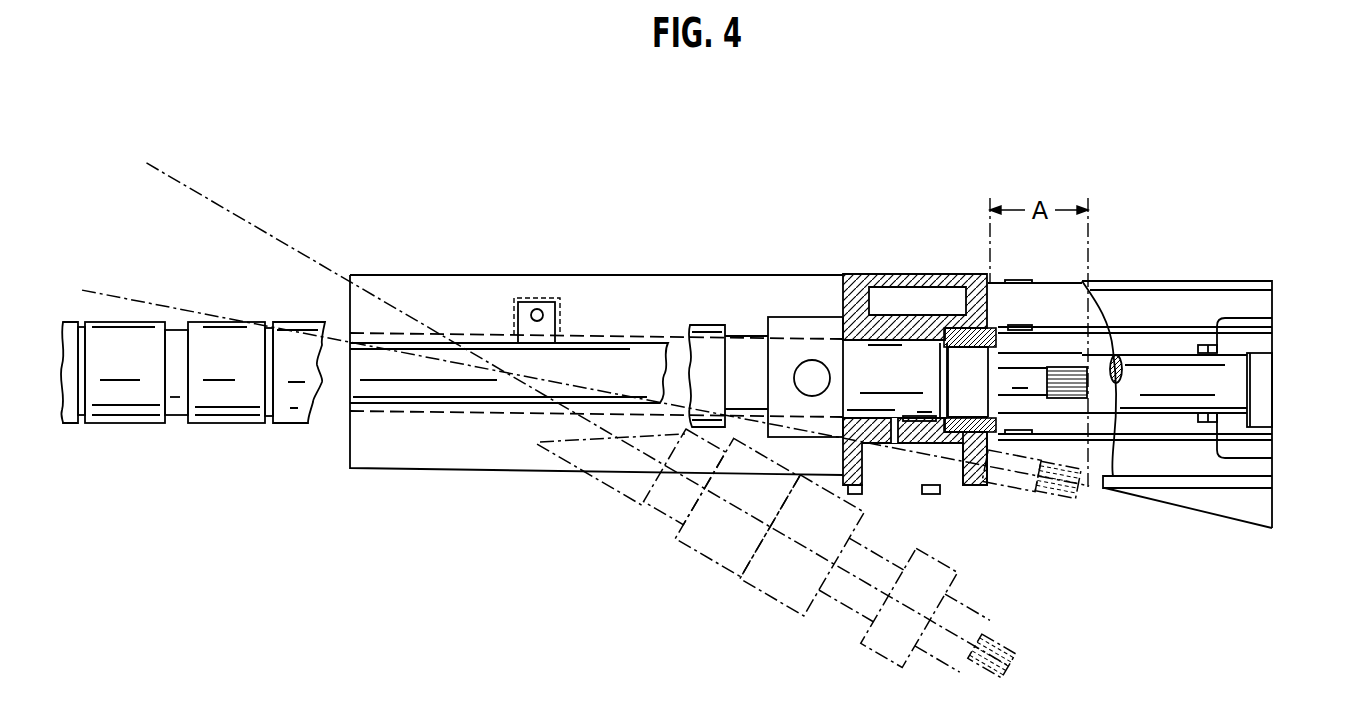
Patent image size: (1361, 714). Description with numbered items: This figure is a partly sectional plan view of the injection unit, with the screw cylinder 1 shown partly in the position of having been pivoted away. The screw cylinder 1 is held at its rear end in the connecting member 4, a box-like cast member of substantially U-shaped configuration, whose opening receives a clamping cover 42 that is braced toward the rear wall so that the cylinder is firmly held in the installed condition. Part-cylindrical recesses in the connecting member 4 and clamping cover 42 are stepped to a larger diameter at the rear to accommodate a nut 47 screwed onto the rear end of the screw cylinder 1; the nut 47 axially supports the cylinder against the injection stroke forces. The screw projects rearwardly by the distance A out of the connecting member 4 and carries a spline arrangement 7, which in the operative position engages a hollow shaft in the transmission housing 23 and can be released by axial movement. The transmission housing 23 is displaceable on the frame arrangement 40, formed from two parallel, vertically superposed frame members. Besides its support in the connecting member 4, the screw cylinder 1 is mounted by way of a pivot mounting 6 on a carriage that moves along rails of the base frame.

The screw cylinder 1 is at (240, 390).
The connecting member 4 is at (858, 274).
The pivot mounting 6 is at (537, 305).
The spline arrangement 7 is at (1080, 396).
The transmission housing 23 is at (1258, 452).
The frame arrangement 40 is at (1172, 372).
The clamping cover 42 is at (978, 487).
The nut 47 is at (998, 323).